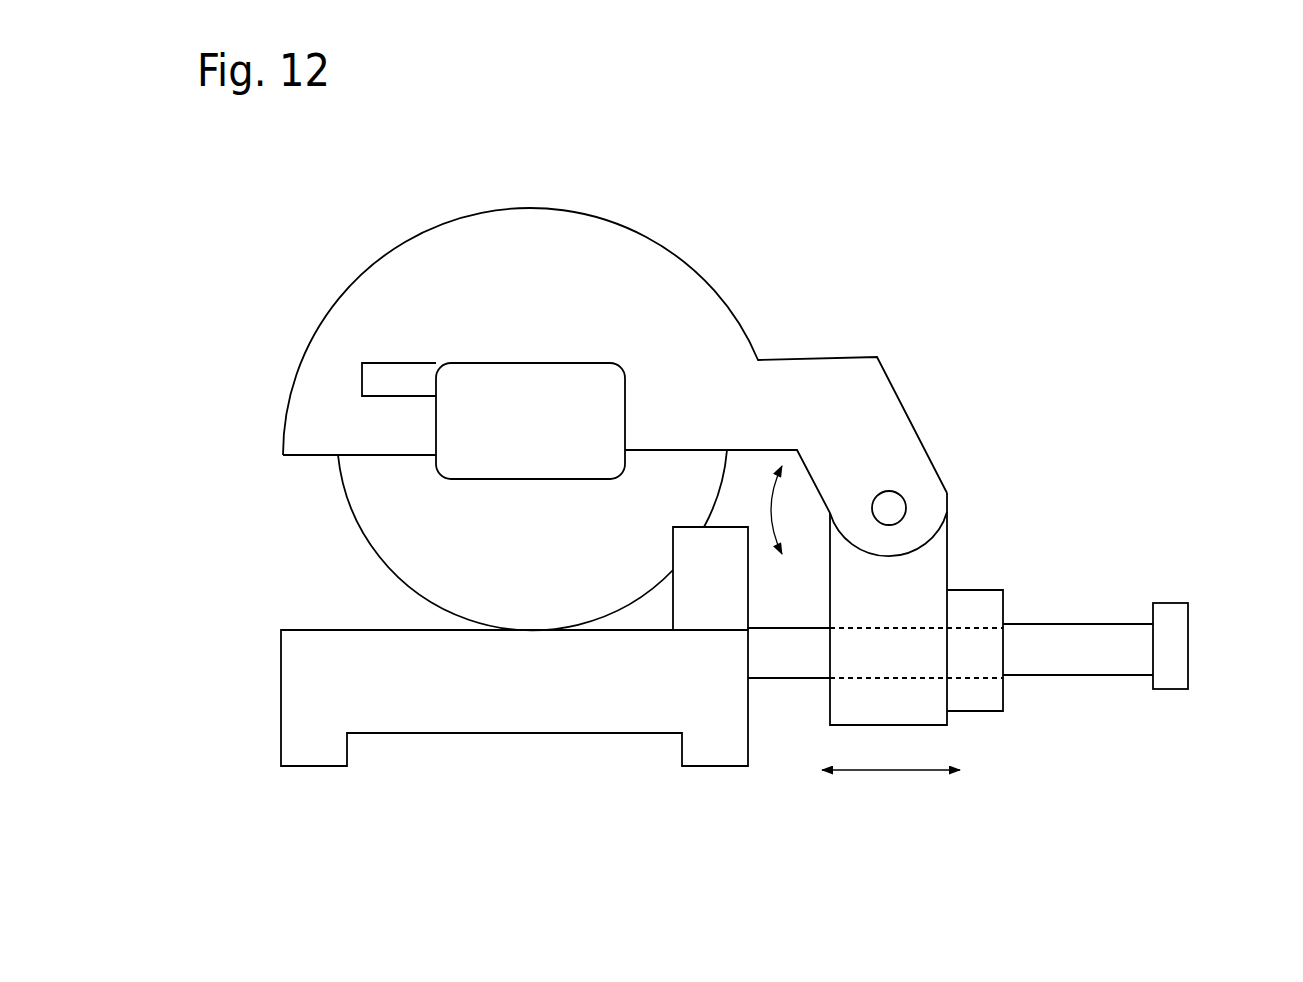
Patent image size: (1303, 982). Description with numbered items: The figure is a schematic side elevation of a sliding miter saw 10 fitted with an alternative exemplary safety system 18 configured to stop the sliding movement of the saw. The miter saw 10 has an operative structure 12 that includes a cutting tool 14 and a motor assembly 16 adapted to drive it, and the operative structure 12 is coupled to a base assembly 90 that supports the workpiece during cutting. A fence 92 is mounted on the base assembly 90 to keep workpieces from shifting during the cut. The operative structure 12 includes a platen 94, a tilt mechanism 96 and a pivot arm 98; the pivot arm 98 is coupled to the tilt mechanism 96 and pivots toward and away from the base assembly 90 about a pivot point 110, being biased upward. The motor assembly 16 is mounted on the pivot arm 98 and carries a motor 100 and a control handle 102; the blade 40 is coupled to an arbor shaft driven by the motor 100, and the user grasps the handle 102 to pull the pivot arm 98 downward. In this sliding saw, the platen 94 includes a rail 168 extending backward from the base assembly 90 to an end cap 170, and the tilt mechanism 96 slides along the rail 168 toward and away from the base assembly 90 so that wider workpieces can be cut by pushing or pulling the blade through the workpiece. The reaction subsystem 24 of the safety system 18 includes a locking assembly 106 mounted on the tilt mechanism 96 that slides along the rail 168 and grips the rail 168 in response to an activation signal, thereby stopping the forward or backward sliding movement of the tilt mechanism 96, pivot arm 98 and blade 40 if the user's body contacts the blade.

The miter saw 10 is at (270, 227).
The operative structure 12 is at (1100, 252).
The cutting tool 14 is at (280, 545).
The motor assembly 16 is at (435, 315).
The safety system 18 is at (1128, 473).
The reaction subsystem 24 is at (1080, 725).
The blade 40 is at (392, 560).
The base assembly 90 is at (275, 788).
The fence 92 is at (697, 602).
The platen 94 is at (775, 666).
The tilt mechanism 96 is at (937, 585).
The pivot arm 98 is at (935, 495).
The motor 100 is at (465, 465).
The control handle 102 is at (393, 389).
The locking assembly 106 is at (995, 603).
The pivot point 110 is at (888, 507).
The rail 168 is at (1085, 637).
The end cap 170 is at (1177, 622).